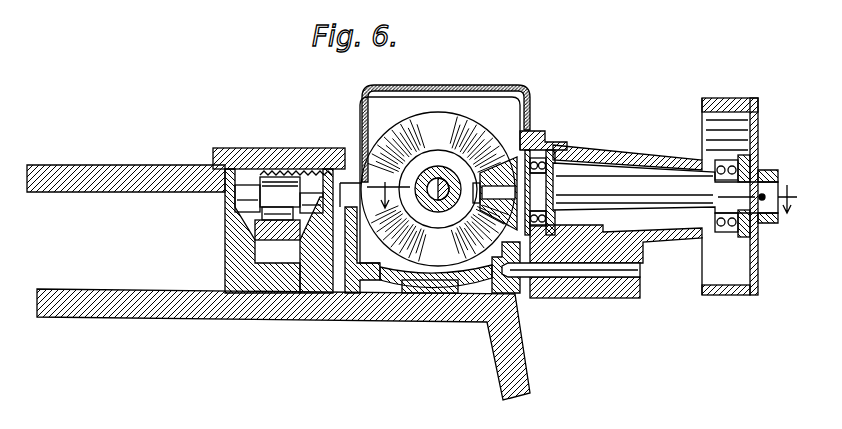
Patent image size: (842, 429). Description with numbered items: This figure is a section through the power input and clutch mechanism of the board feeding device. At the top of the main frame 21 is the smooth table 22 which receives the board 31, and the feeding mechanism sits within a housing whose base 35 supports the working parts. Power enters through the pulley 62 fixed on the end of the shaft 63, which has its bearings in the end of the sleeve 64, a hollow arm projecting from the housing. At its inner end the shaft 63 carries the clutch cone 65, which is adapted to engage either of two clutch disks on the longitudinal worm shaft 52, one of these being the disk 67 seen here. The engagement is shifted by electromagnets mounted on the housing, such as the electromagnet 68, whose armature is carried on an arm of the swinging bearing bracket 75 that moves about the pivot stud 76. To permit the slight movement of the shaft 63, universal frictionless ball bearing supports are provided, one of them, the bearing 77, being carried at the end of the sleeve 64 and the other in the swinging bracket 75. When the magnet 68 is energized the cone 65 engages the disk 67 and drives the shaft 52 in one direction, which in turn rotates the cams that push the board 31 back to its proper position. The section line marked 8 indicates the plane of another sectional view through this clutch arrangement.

The table 22 is at (132, 165).
The main frame 21 is at (530, 396).
The board 31 is at (272, 153).
The base of the housing 35 is at (453, 287).
The shaft 52 is at (415, 157).
The clutch disk 67 is at (433, 120).
The section line 8- 8 is at (580, 192).
The clutch cone 65 is at (500, 167).
The electromagnet 68 is at (540, 160).
The swinging bearing bracket 75 is at (582, 298).
The pivot stud 76 is at (543, 298).
The shaft 63 is at (747, 190).
The sleeve 64 is at (710, 240).
The pulley 62 is at (706, 98).
The universal ball bearing support 77 is at (757, 240).